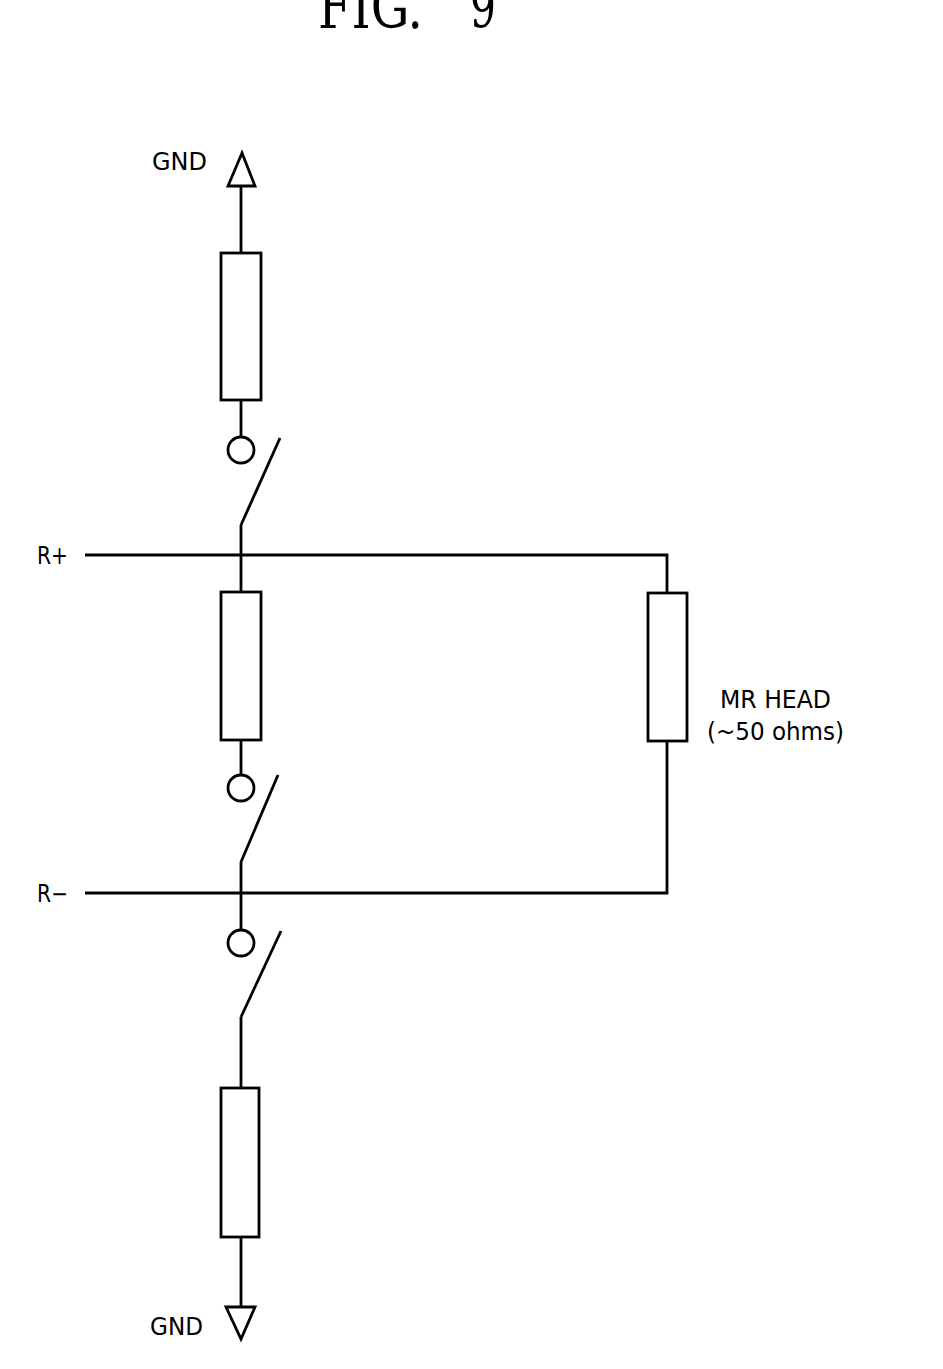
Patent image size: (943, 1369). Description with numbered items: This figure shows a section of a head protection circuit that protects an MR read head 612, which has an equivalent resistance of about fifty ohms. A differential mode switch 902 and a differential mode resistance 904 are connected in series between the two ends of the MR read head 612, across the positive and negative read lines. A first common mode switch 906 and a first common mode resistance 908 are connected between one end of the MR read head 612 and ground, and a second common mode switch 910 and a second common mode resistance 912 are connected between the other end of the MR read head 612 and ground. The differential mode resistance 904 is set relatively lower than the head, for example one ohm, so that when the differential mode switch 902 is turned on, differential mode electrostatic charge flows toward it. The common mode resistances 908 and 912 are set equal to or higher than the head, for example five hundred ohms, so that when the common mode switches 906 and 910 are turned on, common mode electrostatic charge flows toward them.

The first common mode resistance 908 is at (262, 317).
The first common mode switch 906 is at (266, 487).
The differential mode resistance 904 is at (262, 678).
The differential mode switch 902 is at (265, 832).
The second common mode switch 910 is at (266, 987).
The second common mode resistance 912 is at (260, 1131).
The MR read head 612 is at (688, 643).